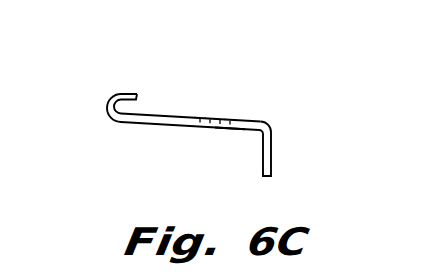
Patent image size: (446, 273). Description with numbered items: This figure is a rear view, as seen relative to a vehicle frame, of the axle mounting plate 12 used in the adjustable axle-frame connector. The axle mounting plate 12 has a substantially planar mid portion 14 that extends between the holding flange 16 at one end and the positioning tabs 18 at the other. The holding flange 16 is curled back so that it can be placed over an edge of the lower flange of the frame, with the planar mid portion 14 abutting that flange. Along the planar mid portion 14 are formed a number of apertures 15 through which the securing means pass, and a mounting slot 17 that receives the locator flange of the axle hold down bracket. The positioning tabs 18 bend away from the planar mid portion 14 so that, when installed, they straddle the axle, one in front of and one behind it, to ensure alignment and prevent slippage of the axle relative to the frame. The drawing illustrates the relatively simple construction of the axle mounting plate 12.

The axle mounting plate 12 is at (258, 65).
The substantially planar mid portion 14 is at (180, 124).
The apertures 15 is at (200, 127).
The holding flange 16 is at (138, 94).
The mounting slot 17 is at (225, 129).
The positioning tabs 18 is at (270, 165).